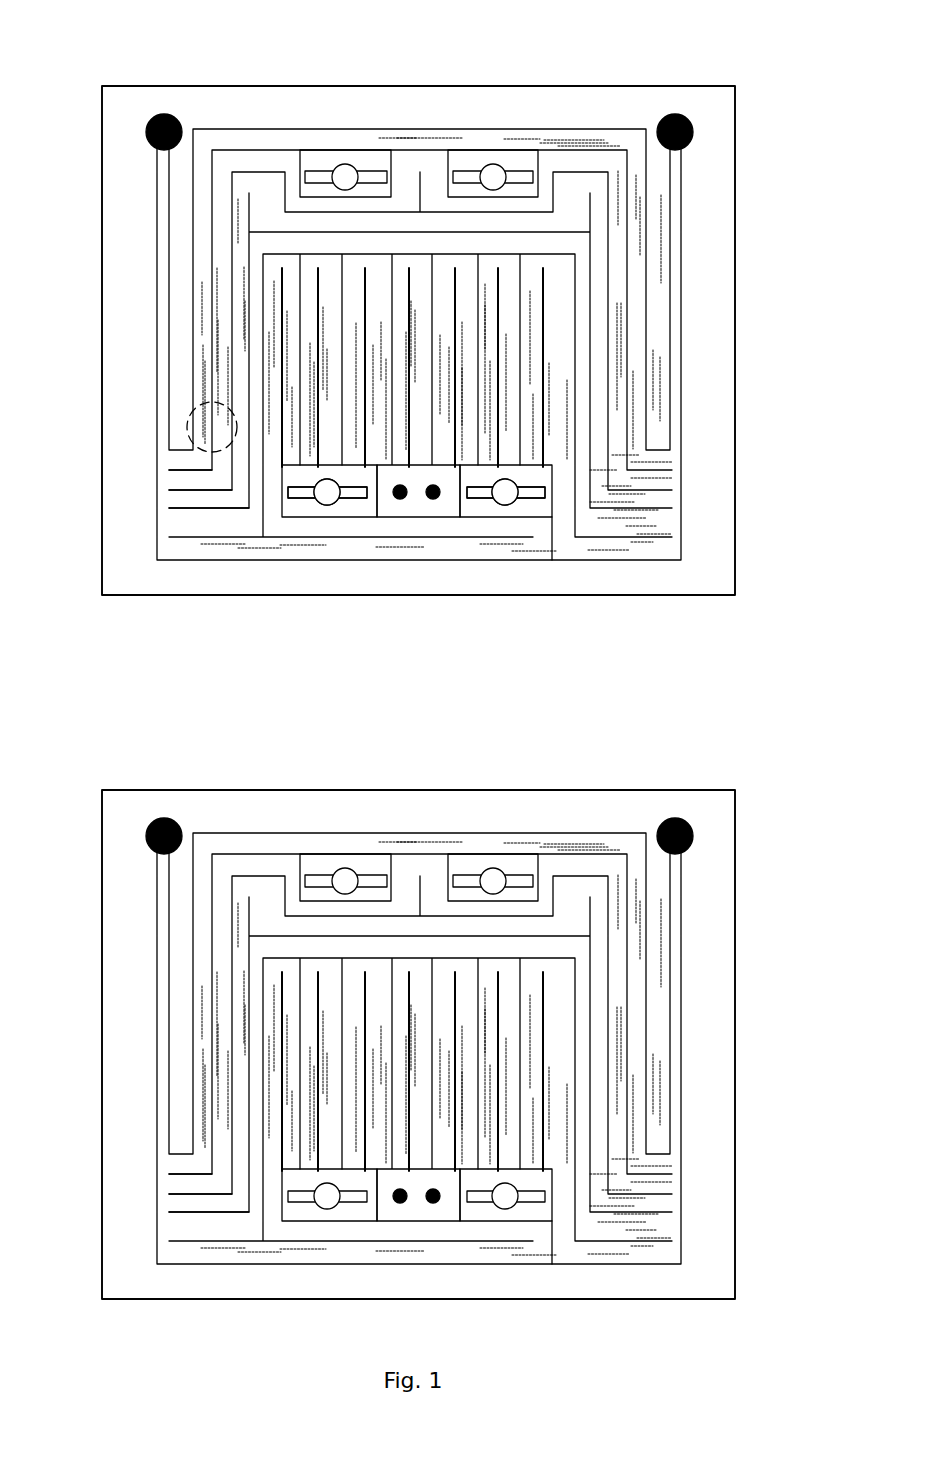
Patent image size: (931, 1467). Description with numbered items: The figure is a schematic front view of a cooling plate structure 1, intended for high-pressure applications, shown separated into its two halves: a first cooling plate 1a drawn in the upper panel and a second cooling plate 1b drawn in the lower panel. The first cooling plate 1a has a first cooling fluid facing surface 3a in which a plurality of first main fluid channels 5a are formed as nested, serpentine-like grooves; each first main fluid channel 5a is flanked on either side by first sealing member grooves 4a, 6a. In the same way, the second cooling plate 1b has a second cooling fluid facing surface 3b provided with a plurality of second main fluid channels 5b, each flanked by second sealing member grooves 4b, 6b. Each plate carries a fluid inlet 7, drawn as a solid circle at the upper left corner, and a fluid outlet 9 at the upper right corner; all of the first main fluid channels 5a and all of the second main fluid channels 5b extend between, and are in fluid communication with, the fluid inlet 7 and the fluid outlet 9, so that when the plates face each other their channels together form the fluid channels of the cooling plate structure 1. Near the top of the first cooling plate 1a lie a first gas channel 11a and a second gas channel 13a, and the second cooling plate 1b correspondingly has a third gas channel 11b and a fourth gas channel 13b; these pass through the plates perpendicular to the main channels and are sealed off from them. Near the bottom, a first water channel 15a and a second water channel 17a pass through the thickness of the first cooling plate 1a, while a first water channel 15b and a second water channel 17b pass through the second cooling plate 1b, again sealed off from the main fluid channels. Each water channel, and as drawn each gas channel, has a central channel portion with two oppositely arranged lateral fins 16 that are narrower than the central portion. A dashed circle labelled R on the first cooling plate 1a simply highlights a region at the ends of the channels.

The cooling plate structure 1 is at (781, 587).
The first cooling plate 1a is at (735, 257).
The second cooling plate 1b is at (735, 961).
The first cooling fluid facing surface 3a is at (716, 398).
The second cooling fluid facing surface 3b is at (716, 1102).
The first sealing member groove 4a is at (265, 128).
The second sealing member groove 4b is at (419, 942).
The first main fluid channel 5a is at (224, 140).
The second main fluid channel 5b is at (130, 990).
The first sealing member groove 6a is at (283, 148).
The second sealing member groove 6b is at (420, 959).
The fluid inlet 7 is at (147, 116).
The fluid outlet 9 is at (672, 114).
The first gas channel 11a is at (345, 177).
The third gas channel 11b is at (345, 813).
The second gas channel 13a is at (493, 177).
The fourth gas channel 13b is at (493, 813).
The first water channel 15a is at (327, 492).
The first water channel 15b is at (329, 1259).
The lateral fin 16 is at (304, 500).
The second water channel 17a is at (505, 492).
The second water channel 17b is at (506, 1264).
The detail region R is at (196, 455).